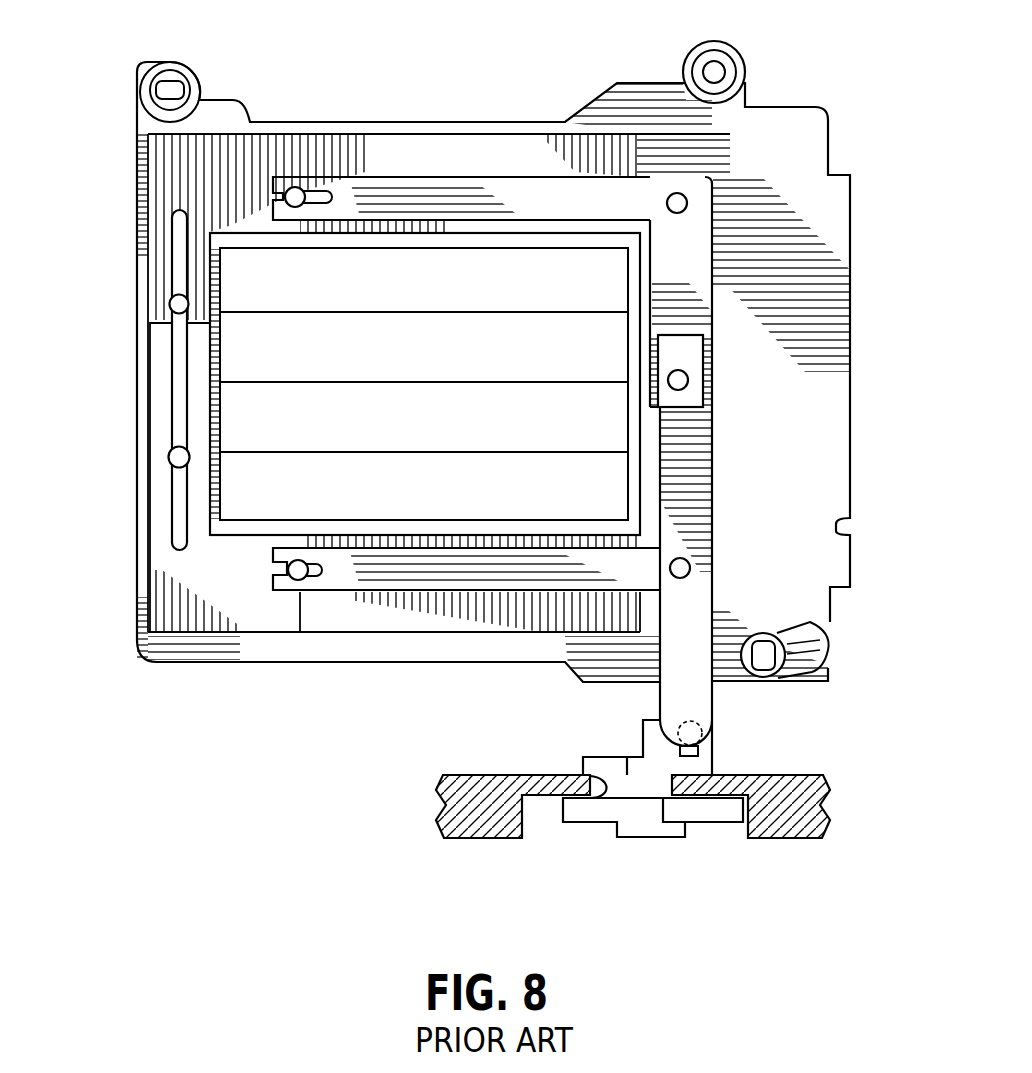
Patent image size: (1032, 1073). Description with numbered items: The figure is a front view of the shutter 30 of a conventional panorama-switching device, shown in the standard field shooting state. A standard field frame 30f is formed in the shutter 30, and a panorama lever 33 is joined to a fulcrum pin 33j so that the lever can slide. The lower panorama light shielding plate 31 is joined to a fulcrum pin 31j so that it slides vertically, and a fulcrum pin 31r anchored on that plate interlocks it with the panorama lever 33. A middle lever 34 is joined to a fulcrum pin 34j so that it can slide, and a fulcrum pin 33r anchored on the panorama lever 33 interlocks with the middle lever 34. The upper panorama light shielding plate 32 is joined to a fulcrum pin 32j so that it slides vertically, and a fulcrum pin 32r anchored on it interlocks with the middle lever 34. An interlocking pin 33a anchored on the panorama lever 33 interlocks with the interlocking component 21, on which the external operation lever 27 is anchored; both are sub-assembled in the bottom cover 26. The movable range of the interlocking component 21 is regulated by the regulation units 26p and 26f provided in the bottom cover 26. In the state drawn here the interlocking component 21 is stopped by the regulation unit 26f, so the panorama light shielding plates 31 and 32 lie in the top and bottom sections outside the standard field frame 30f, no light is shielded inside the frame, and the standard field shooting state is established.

The interlocking component 21 is at (640, 770).
The bottom cover 26 is at (473, 830).
The regulation unit 26p is at (605, 797).
The regulation component 26f is at (690, 814).
The external operation lever 27 is at (657, 822).
The shutter 30 is at (800, 480).
The standard field frame 30f is at (467, 247).
The panorama light shielding plate 31 is at (202, 607).
The fulcrum pin 31r is at (302, 580).
The fulcrum pin 31j is at (169, 457).
The panorama light shielding plate 32 is at (284, 150).
The fulcrum pin 32r is at (301, 188).
The fulcrum pin 32j is at (170, 305).
The panorama lever 33 is at (702, 690).
The interlocking pin 33a is at (660, 721).
The fulcrum pin 33j is at (690, 564).
The fulcrum pin 33r is at (688, 380).
The middle lever 34 is at (692, 257).
The fulcrum pin 34j is at (681, 196).